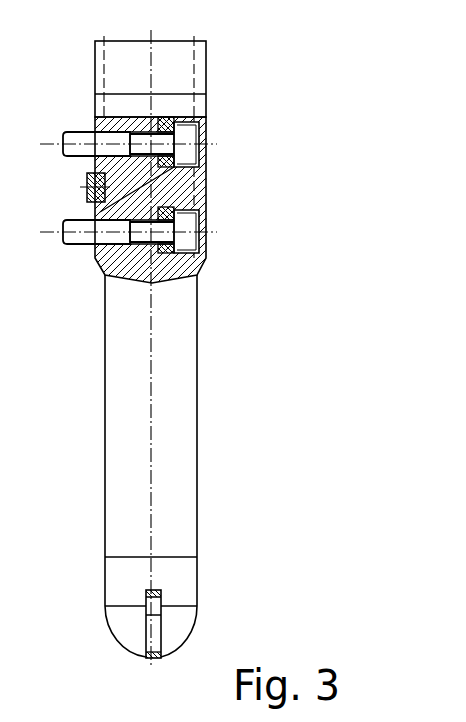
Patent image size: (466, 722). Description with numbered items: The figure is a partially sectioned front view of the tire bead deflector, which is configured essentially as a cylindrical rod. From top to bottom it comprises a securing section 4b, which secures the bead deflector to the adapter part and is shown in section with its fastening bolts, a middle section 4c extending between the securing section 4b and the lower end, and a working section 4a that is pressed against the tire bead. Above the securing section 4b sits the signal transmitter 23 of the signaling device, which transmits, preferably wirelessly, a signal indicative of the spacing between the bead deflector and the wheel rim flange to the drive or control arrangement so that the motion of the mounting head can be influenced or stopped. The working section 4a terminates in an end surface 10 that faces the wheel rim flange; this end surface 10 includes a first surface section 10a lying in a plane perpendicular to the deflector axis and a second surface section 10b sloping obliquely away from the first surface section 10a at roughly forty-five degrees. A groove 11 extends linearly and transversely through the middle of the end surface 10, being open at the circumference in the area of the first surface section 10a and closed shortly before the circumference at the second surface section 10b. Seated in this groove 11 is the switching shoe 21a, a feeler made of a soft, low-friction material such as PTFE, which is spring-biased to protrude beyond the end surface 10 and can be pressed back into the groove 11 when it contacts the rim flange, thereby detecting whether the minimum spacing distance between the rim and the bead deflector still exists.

The signal transmitter 23 is at (178, 68).
The securing section 4b is at (187, 187).
The middle section 4c is at (200, 375).
The working section 4a is at (183, 572).
The switching shoe 21a is at (155, 602).
The first surface section 10a is at (128, 607).
The second surface section 10b is at (138, 637).
The end surface 10 is at (168, 620).
The groove 11 is at (148, 658).